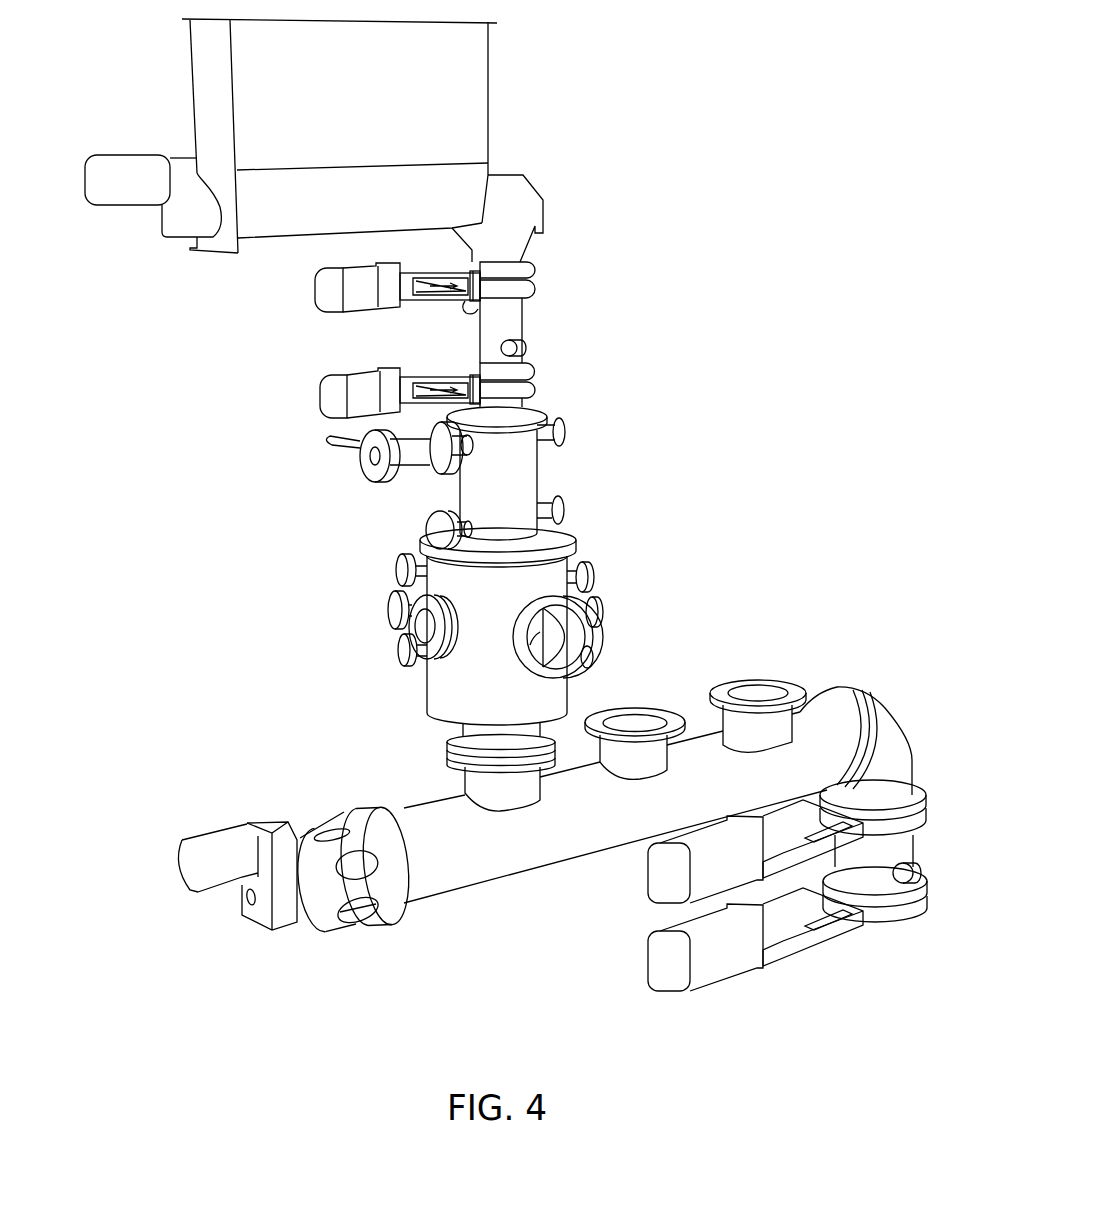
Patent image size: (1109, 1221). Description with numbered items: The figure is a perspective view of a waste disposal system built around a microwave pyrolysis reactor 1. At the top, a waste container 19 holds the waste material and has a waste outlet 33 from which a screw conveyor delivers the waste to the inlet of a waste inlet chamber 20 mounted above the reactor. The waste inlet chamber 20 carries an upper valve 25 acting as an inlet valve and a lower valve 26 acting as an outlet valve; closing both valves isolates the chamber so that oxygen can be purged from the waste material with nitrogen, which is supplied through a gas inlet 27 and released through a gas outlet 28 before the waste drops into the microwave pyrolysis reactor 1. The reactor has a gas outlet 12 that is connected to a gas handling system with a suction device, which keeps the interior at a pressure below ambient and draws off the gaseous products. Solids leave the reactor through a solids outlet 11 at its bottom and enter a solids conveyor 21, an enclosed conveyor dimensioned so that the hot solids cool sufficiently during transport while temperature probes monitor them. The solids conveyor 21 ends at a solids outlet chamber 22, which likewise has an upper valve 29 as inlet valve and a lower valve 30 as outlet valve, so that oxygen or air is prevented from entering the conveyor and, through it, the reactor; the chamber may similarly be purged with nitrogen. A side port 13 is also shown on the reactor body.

The microwave pyrolysis reactor 1 is at (378, 648).
The solids outlet 11 is at (482, 735).
The gas outlet 12 is at (373, 458).
The side port 13 is at (565, 643).
The waste container 19 is at (498, 82).
The waste inlet chamber 20 is at (530, 319).
The solids conveyor 21 is at (575, 868).
The solids outlet chamber 22 is at (930, 847).
The upper valve 25 is at (327, 290).
The lower valve 26 is at (330, 392).
The gas inlet 27 is at (524, 351).
The gas outlet 28 is at (464, 306).
The upper valve 29 is at (675, 873).
The lower valve 30 is at (665, 879).
The waste outlet 33 is at (508, 238).